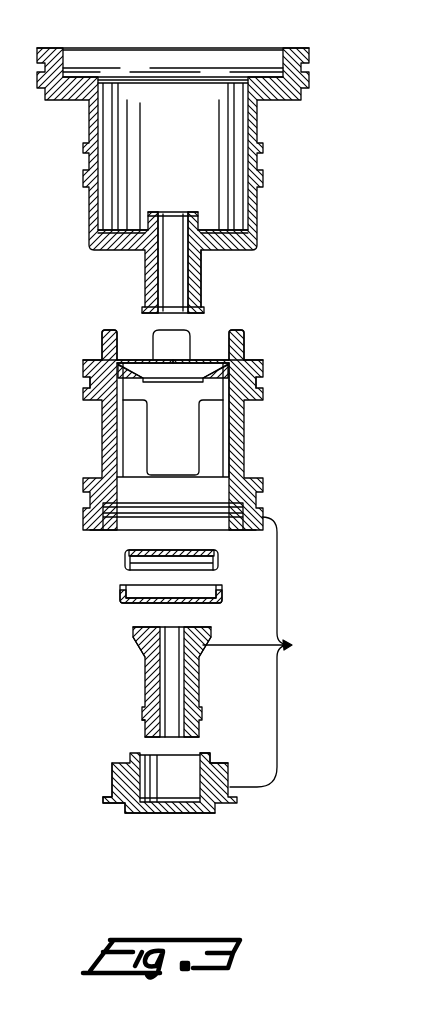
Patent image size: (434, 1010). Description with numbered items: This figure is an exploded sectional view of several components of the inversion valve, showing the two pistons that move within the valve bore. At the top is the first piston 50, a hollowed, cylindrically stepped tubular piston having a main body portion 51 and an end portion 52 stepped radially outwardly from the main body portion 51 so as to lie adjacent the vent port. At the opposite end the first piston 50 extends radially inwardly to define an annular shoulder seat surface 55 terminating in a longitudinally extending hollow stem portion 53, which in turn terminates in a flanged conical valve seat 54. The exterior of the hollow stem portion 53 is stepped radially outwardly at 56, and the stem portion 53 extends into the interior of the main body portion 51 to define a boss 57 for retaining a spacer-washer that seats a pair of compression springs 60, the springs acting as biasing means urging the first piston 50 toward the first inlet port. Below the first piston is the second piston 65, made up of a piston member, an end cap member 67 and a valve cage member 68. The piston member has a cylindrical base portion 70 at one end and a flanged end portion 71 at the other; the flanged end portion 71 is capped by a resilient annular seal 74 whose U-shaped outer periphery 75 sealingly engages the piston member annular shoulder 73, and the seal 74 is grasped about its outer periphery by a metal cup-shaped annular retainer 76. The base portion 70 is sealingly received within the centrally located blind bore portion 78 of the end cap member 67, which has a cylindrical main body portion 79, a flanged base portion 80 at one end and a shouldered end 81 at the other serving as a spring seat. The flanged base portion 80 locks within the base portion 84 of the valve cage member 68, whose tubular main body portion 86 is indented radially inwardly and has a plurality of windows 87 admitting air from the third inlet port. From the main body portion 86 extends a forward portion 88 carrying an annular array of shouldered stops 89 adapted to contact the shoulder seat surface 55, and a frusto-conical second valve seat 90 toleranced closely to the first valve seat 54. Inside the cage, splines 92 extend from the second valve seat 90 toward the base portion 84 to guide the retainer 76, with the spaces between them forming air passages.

The first piston 50 is at (316, 50).
The main body portion 51 is at (88, 118).
The end portion 52 is at (292, 49).
The hollow stem portion 53 is at (140, 265).
The flanged conical valve seat 54 is at (204, 309).
The annular shoulder seat surface 55 is at (110, 250).
The radially outward step 56 is at (204, 272).
The boss 57 is at (205, 212).
The compression springs 60 is at (145, 682).
The second piston 65 is at (262, 652).
The end cap member 67 is at (112, 765).
The valve cage member 68 is at (102, 443).
The cylindrical base portion 70 is at (142, 731).
The flanged end portion 71 is at (133, 632).
The piston member annular shoulder 73 is at (133, 641).
The annular seal 74 is at (135, 552).
The U-shaped outer periphery 75 is at (127, 562).
The cup-shaped annular retainer 76 is at (222, 594).
The blind bore portion 78 is at (188, 762).
The cylindrical main body portion 79 is at (110, 788).
The flanged base portion 80 is at (106, 803).
The shouldered end 81 is at (214, 760).
The base portion 84 is at (84, 517).
The main body portion 86 is at (258, 400).
The openings or windows 87 is at (232, 482).
The forward portion 88 is at (260, 364).
The shouldered stops 89 is at (102, 333).
The frusto-conical second valve seat 90 is at (150, 370).
The splines 92 is at (125, 420).